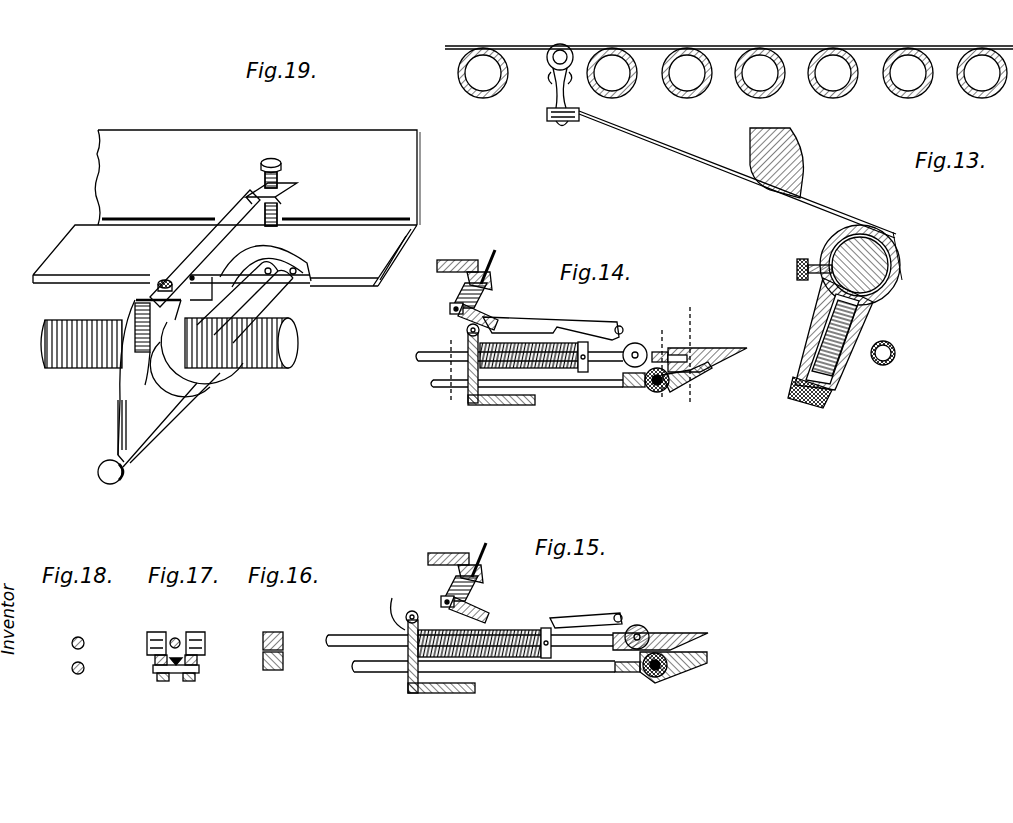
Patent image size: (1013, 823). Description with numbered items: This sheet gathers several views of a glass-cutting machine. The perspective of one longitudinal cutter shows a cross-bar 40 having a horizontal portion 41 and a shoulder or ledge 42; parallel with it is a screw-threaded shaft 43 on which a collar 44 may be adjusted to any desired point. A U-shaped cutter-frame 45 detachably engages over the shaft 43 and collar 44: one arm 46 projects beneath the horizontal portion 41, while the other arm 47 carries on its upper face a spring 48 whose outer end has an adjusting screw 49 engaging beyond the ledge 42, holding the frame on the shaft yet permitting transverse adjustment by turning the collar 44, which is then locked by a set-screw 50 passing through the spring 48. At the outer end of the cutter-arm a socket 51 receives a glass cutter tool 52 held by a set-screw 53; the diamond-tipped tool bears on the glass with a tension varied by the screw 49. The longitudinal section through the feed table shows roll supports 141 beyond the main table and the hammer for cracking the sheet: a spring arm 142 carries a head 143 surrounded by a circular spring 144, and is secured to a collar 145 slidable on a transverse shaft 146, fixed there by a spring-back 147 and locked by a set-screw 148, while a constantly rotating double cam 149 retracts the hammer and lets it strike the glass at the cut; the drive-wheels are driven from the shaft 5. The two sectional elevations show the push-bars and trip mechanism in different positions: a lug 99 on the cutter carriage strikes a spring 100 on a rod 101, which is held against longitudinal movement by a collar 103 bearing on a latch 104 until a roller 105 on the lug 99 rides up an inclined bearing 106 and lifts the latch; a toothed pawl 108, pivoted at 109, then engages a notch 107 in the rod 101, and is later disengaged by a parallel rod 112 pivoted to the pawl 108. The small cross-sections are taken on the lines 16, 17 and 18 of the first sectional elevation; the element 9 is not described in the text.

In FIG. 14, the shaft 5 is at (622, 322).
In FIG. 14, the roller 9 is at (660, 393).
In FIG. 14, the section line 16— 16 is at (694, 356).
In FIG. 14, the section line 17— 17 is at (651, 366).
In FIG. 14, the section line 18— 18 is at (488, 372).
In FIG. 19, the cross-bar 40 is at (421, 195).
In FIG. 19, the horizontal portion 41 is at (408, 250).
In FIG. 19, the shoulder or ledge 42 is at (398, 232).
In FIG. 19, the screw-shaft 43 is at (298, 341).
In FIG. 19, the collar 44 is at (100, 370).
In FIG. 19, the U-shaped cutter-frame 45 is at (207, 378).
In FIG. 19, the arm 46 is at (278, 313).
In FIG. 19, the arm 47 is at (165, 366).
In FIG. 19, the spring 48 is at (223, 245).
In FIG. 19, the adjusting screw 49 is at (277, 168).
In FIG. 19, the set-screw 50 is at (165, 281).
In FIG. 19, the socket 51 is at (109, 452).
In FIG. 19, the glass cutter tool 52 is at (122, 430).
In FIG. 19, the set-screw 53 is at (124, 472).
In FIG. 15, the lug 99 is at (394, 603).
In FIG. 14, the spring 100 is at (529, 355).
In FIG. 15, the spring 100 is at (500, 655).
In FIG. 14, the rod 101 is at (418, 357).
In FIG. 15, the rod 101 is at (345, 635).
In FIG. 18, the rod 101 is at (83, 638).
In FIG. 17, the rod 101 is at (177, 638).
In FIG. 14, the collar 103 is at (583, 372).
In FIG. 15, the collar 103 is at (548, 632).
In FIG. 15, the latch 104 is at (592, 617).
In FIG. 14, the roller 105 is at (466, 333).
In FIG. 15, the roller 105 is at (416, 610).
In FIG. 14, the inclined bearing 106 is at (465, 315).
In FIG. 15, the inclined bearing 106 is at (478, 612).
In FIG. 14, the notch 107 is at (703, 347).
In FIG. 16, the notch 107 is at (283, 638).
In FIG. 14, the toothed pawl 108 is at (700, 372).
In FIG. 17, the toothed pawl 108 is at (205, 636).
In FIG. 16, the toothed pawl 108 is at (283, 660).
In FIG. 14, the pawl pivot 109 is at (637, 345).
In FIG. 15, the pawl pivot 109 is at (640, 632).
In FIG. 17, the pawl pivot 109 is at (147, 648).
In FIG. 14, the rod 112 is at (434, 385).
In FIG. 15, the rod 112 is at (365, 672).
In FIG. 18, the rod 112 is at (84, 666).
In FIG. 13, the roll supports 141 is at (912, 96).
In FIG. 13, the spring arm 142 is at (708, 172).
In FIG. 13, the head 143 is at (555, 118).
In FIG. 13, the circular spring 144 is at (552, 72).
In FIG. 13, the collar 145 is at (902, 270).
In FIG. 13, the shaft 146 is at (893, 283).
In FIG. 13, the spring-back 147 is at (830, 400).
In FIG. 13, the set-screw 148 is at (800, 273).
In FIG. 13, the double cam 149 is at (770, 145).